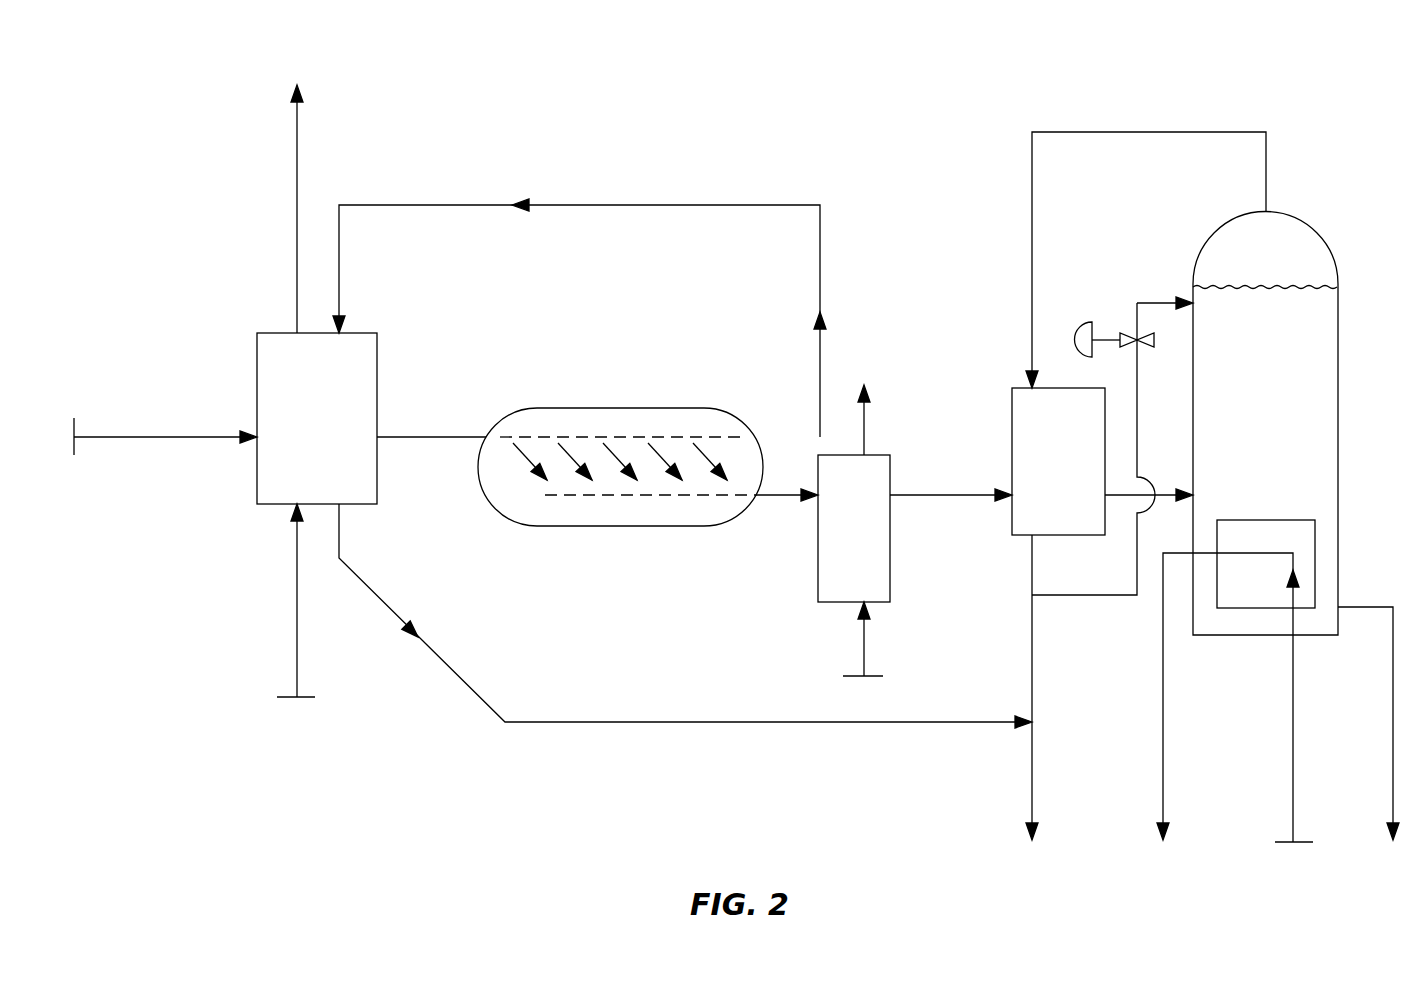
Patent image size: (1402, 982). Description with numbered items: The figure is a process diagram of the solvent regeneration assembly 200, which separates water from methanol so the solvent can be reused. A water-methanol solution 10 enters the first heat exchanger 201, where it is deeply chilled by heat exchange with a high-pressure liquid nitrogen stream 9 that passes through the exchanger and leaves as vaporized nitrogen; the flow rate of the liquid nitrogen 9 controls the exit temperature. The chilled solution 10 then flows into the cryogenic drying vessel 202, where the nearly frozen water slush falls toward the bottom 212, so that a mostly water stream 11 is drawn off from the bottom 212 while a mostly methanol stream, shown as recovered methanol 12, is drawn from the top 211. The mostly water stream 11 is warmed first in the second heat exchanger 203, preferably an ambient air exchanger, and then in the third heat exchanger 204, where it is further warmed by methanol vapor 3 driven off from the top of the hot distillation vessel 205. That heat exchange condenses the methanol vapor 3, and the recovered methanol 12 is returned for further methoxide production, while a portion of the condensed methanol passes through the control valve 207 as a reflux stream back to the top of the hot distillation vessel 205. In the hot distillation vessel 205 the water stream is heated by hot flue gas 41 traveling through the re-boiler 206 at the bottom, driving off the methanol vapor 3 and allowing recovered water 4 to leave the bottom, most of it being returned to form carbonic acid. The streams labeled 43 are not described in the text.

The solvent regeneration assembly 200 is at (185, 767).
The first heat exchanger 201 is at (257, 357).
The cryogenic drying vessel 202 is at (586, 541).
The second heat exchanger 203 is at (818, 588).
The third heat exchanger 204 is at (1012, 518).
The hot distillation vessel 205 is at (1305, 218).
The re-boiler 206 is at (1255, 520).
The control valve 207 is at (1083, 320).
The top of the cryogenic drying vessel 211 is at (722, 408).
The bottom of the cryogenic drying vessel 212 is at (710, 527).
The liquid nitrogen stream 9 is at (297, 160).
The water-methanol solution 10 is at (153, 437).
The mostly water stream 11 is at (768, 497).
The recovered methanol 12 is at (588, 205).
The methanol vapor 3 is at (1050, 132).
The recovered water 4 is at (1393, 757).
The hot flue gas 41 is at (1163, 757).
The stripping gas stream 43 is at (866, 425).